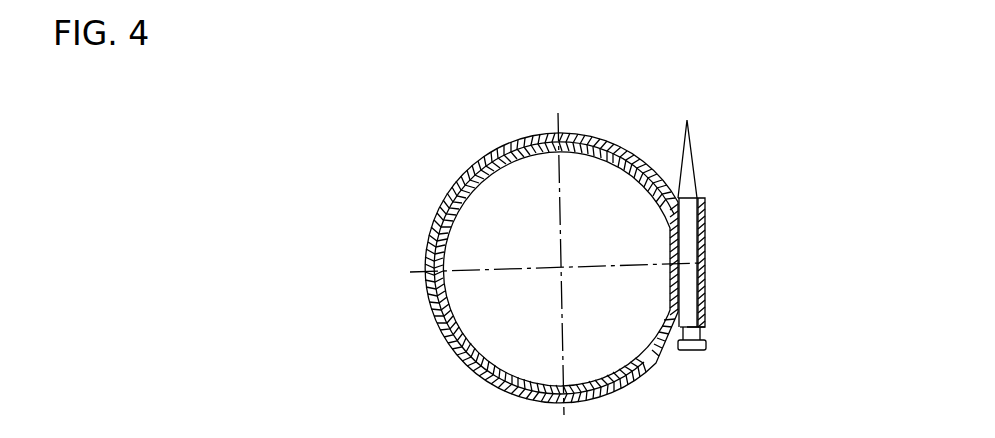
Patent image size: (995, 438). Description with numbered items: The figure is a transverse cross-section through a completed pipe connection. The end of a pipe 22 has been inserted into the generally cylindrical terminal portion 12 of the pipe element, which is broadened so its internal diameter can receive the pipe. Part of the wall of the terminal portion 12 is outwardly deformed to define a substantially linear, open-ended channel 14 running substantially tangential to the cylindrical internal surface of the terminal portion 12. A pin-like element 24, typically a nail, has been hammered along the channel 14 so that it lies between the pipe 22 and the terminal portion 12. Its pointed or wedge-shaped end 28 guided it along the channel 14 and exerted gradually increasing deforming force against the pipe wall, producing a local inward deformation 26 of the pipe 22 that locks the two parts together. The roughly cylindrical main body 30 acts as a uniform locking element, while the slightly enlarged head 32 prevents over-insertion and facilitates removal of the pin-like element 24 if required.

The terminal portion 12 is at (493, 148).
The pipe 22 is at (460, 175).
The local inward deformation 26 is at (668, 253).
The pointed or wedge-shaped end 28 is at (688, 185).
The pin-like element 24 is at (705, 233).
The main body 30 is at (705, 265).
The channel 14 is at (705, 293).
The head 32 is at (705, 352).